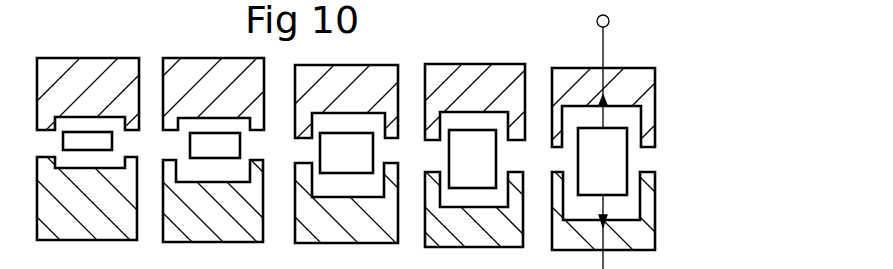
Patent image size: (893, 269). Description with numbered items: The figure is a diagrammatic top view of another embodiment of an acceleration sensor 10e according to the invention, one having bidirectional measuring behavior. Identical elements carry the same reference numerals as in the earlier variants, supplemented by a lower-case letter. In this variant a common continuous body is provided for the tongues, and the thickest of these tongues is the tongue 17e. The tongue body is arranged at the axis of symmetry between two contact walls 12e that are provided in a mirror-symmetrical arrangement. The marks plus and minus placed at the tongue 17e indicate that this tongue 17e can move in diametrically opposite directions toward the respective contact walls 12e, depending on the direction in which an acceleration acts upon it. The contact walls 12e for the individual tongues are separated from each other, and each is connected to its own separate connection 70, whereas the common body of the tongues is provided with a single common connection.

The acceleration sensor 10e is at (394, 134).
The contact wall 12e is at (643, 82).
The tongue 17e is at (618, 170).
The connection 70 is at (612, 38).